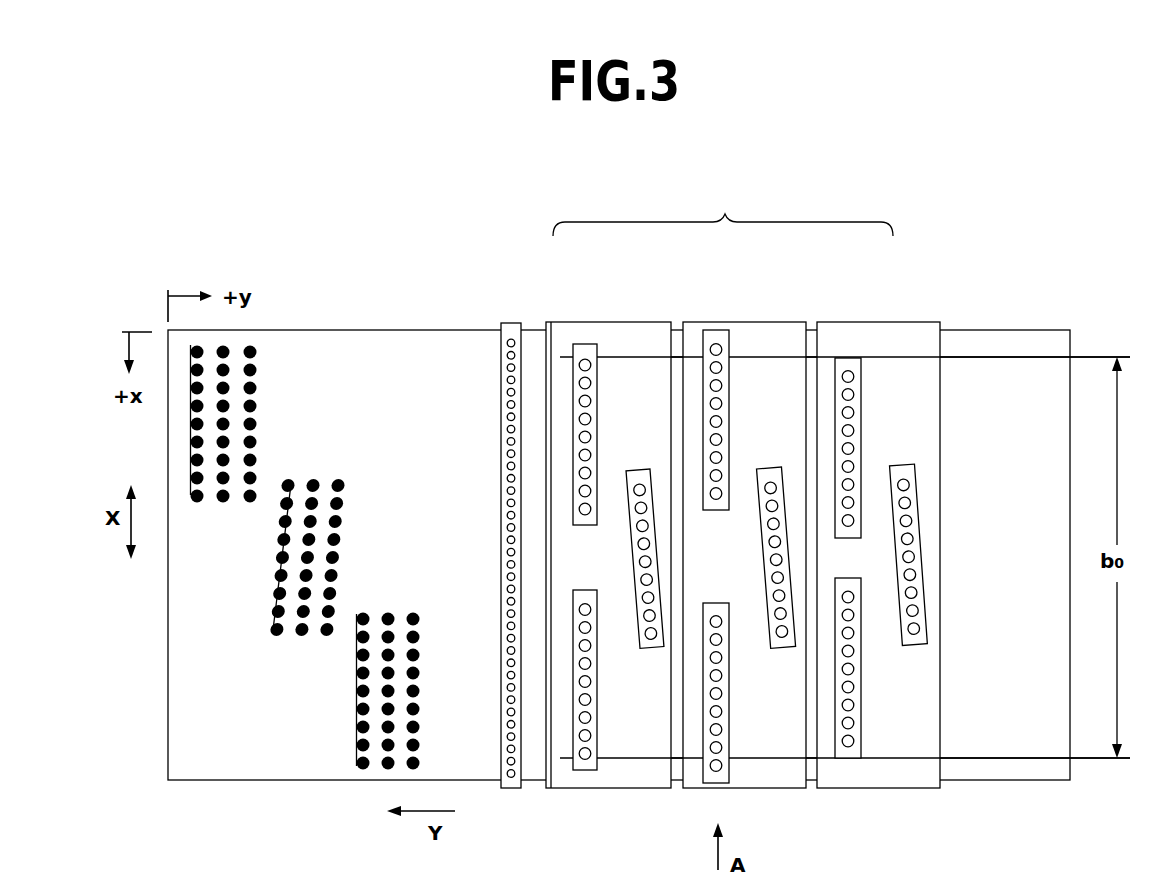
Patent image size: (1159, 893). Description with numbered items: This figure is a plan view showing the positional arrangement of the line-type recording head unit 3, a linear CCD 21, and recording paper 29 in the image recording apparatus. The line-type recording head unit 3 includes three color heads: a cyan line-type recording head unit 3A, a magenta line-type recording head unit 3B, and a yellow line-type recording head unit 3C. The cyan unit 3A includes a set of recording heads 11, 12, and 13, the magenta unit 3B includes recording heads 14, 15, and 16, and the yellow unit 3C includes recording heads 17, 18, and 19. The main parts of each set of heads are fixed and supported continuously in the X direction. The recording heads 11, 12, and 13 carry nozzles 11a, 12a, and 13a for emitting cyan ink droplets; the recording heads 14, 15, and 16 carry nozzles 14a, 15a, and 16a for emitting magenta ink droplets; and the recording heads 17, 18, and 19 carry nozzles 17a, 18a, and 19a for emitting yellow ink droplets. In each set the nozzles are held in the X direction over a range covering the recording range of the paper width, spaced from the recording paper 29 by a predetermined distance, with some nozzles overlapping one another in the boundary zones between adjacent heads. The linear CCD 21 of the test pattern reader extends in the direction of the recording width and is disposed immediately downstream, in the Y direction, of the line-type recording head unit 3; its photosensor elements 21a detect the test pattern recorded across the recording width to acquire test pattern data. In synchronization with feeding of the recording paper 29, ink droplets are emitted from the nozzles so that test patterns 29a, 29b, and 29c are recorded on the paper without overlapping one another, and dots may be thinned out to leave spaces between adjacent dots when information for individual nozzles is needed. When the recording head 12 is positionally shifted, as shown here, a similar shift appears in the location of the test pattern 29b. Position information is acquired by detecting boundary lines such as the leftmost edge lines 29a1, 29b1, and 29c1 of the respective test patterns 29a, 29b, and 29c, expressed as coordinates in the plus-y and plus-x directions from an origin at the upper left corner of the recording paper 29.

The line-type recording head unit 3 is at (723, 208).
The C line-type recording head unit 3A is at (570, 322).
The M line-type recording head unit 3B is at (712, 322).
The Y line-type recording head unit 3C is at (842, 322).
The recording head 11 is at (585, 344).
The nozzles 11a is at (590, 402).
The recording head 12 is at (637, 469).
The nozzles 12a is at (630, 540).
The recording head 13 is at (598, 742).
The nozzles 13a is at (598, 700).
The recording head 14 is at (720, 330).
The nozzles 14a is at (722, 402).
The recording head 15 is at (768, 468).
The nozzles 15a is at (760, 535).
The recording head 16 is at (729, 742).
The nozzles 16a is at (729, 693).
The recording head 17 is at (848, 358).
The nozzles 17a is at (853, 402).
The recording head 18 is at (902, 465).
The nozzles 18a is at (907, 522).
The recording head 19 is at (861, 745).
The nozzles 19a is at (861, 703).
The linear CCD 21 is at (512, 323).
The photosensor elements 21a is at (505, 352).
The recording paper 29 is at (1019, 335).
The test pattern 29a is at (257, 387).
The leftmost edge line 29a1 is at (192, 472).
The test pattern 29b is at (344, 520).
The leftmost edge line 29b1 is at (270, 603).
The test pattern 29c is at (418, 652).
The leftmost edge line 29c1 is at (358, 738).